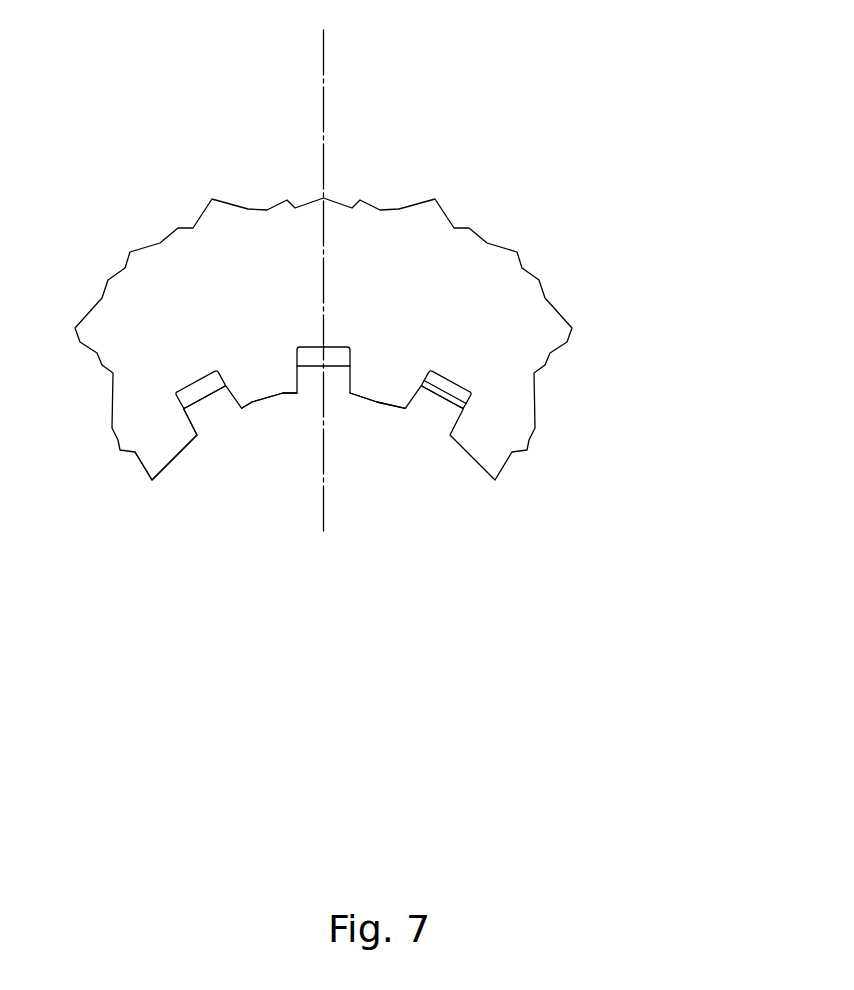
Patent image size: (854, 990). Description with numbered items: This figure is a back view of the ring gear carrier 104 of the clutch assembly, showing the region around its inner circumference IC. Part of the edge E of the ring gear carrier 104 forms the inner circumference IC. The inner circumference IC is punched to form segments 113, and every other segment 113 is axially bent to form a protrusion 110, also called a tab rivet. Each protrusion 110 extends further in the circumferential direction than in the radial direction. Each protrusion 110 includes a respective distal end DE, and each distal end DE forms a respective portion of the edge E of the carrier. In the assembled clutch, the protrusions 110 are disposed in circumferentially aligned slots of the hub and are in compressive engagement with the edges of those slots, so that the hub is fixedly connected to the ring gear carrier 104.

The ring gear carrier 104 is at (688, 83).
The protrusion 110 is at (187, 362).
The segment 113 is at (258, 372).
The edge E is at (452, 387).
The inner circumference IC is at (377, 401).
The distal end DE is at (192, 393).